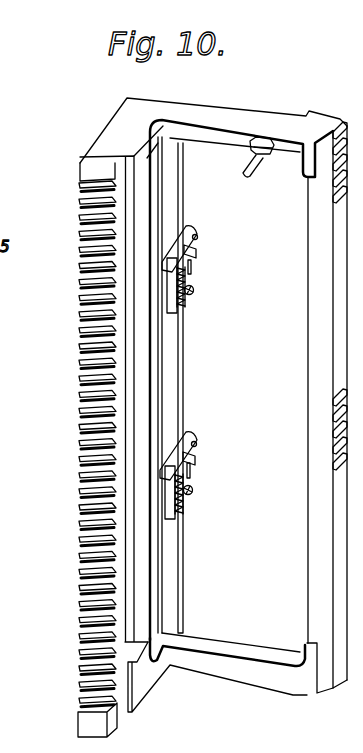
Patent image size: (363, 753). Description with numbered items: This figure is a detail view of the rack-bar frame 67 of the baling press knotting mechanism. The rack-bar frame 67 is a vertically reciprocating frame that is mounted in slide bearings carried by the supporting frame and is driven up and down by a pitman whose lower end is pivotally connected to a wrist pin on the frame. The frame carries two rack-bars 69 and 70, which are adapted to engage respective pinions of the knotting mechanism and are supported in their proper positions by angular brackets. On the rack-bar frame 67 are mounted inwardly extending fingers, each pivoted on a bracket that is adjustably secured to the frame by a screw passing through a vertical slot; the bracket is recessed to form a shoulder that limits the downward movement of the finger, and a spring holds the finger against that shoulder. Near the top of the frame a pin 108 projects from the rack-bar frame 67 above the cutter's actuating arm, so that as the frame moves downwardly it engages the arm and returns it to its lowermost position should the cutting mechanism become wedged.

The rack-bar frame 67 is at (187, 433).
The rack-bar 69 is at (308, 374).
The rack-bar 70 is at (79, 455).
The pin 108 is at (263, 160).